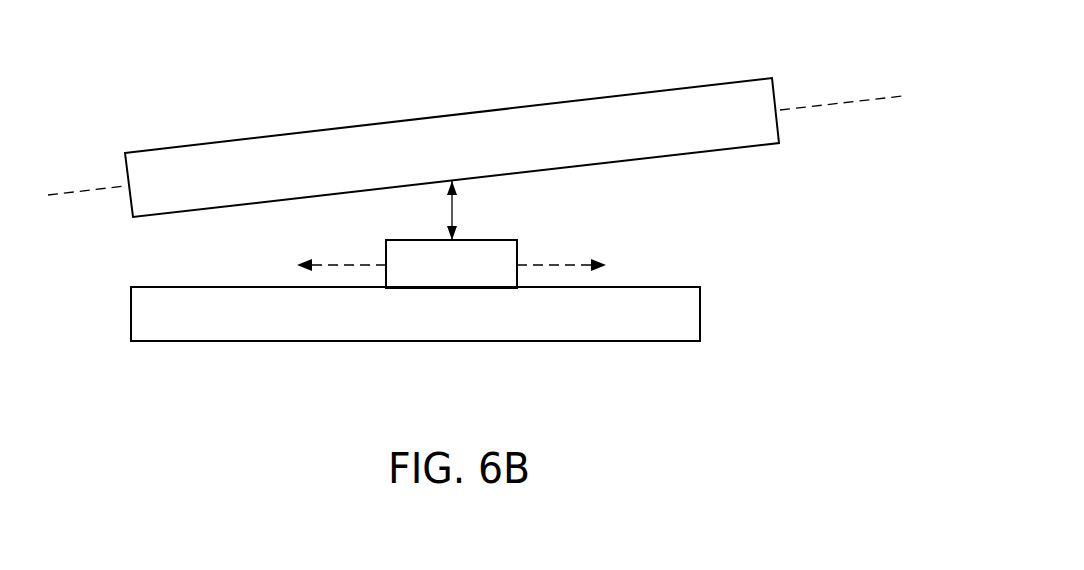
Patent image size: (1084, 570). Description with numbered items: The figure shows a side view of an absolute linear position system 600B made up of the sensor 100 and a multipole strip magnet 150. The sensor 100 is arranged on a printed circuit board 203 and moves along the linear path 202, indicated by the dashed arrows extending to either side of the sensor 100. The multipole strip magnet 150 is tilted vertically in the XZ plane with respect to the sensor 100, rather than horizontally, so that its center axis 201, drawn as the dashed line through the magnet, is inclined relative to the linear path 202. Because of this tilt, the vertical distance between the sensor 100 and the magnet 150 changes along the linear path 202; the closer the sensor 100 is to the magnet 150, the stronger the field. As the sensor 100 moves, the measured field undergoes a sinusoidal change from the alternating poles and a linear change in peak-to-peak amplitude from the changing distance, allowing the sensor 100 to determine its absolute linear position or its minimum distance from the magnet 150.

The absolute linear position system 600B is at (184, 72).
The multipole strip magnet 150 is at (732, 78).
The center axis 201 is at (830, 103).
The sensor 100 is at (500, 240).
The linear path 202 is at (563, 265).
The printed circuit board 203 is at (700, 314).